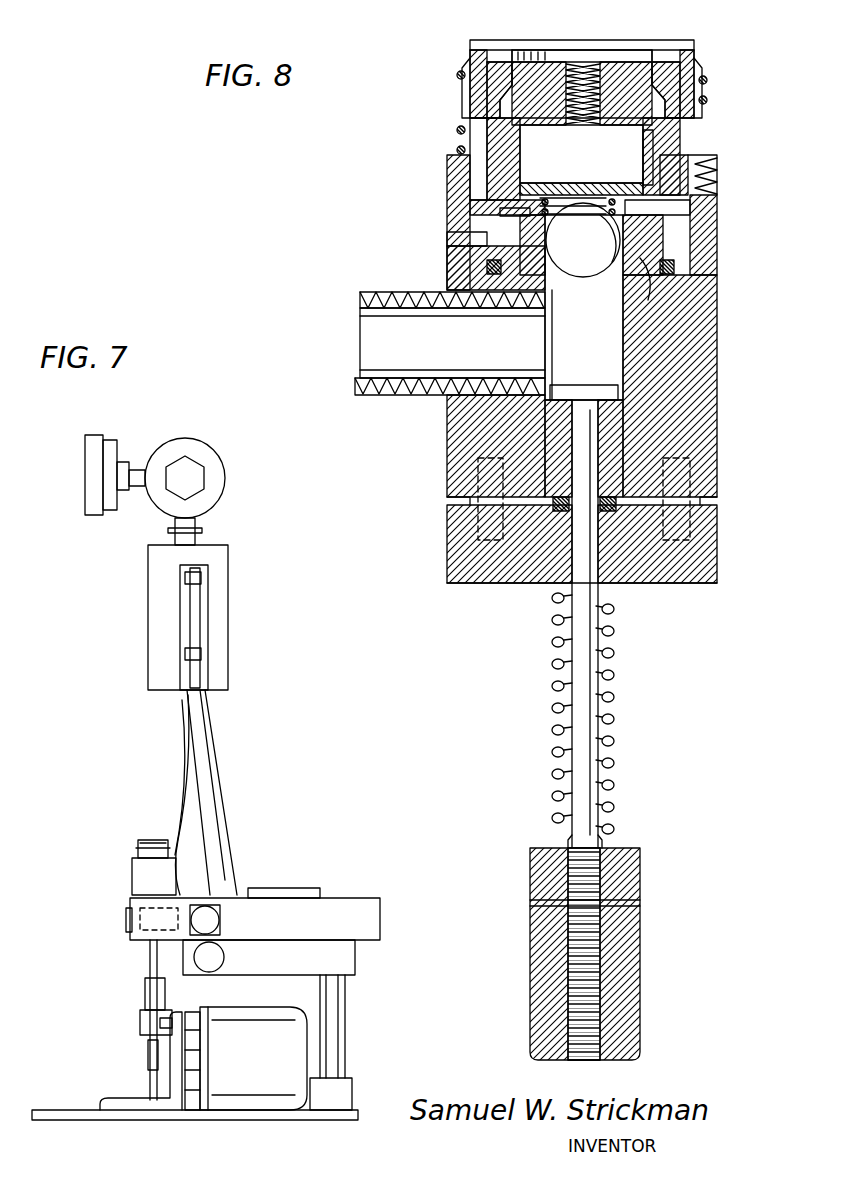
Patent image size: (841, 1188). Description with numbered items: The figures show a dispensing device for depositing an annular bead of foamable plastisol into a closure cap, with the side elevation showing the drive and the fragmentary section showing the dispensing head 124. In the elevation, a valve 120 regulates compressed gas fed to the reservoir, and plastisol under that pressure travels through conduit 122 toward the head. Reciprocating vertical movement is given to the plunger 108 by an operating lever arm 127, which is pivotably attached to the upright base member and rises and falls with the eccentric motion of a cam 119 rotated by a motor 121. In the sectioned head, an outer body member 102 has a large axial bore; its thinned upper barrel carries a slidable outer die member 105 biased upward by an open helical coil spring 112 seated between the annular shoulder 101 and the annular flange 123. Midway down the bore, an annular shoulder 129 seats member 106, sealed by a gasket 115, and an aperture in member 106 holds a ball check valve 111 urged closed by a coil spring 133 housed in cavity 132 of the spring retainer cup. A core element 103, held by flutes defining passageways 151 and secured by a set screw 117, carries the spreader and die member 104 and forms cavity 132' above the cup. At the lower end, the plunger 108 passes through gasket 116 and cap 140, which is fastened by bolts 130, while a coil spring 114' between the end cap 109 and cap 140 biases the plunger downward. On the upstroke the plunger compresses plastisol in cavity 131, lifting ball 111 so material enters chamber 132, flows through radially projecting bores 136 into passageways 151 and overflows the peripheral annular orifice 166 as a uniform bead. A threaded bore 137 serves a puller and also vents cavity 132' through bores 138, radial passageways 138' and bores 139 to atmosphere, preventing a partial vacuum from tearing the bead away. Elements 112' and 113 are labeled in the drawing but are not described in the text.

In FIG. 8, the annular shoulder 101 is at (447, 158).
In FIG. 8, the outer body member 102 is at (447, 432).
In FIG. 8, the core element 103 is at (626, 62).
In FIG. 8, the spreader and die member 104 is at (538, 50).
In FIG. 8, the outer die member 105 is at (466, 66).
In FIG. 8, the valve seat member 106 is at (648, 302).
In FIG. 8, the plunger 108 is at (580, 750).
In FIG. 7, the plunger 108 is at (150, 952).
In FIG. 8, the end cap 109 is at (634, 972).
In FIG. 7, the end cap 109 is at (145, 992).
In FIG. 8, the ball check valve 111 is at (596, 255).
In FIG. 7, the ball check valve 111 is at (305, 888).
In FIG. 7, the open helical coil spring 112 is at (213, 720).
In FIG. 8, the O-ring seal 112' is at (425, 128).
In FIG. 8, the passage 113 is at (540, 198).
In FIG. 8, the coil spring 114' is at (620, 713).
In FIG. 8, the sealing gasket 115 is at (487, 267).
In FIG. 8, the gasket 116 is at (565, 495).
In FIG. 8, the set screw 117 is at (717, 172).
In FIG. 7, the cam 119 is at (150, 1062).
In FIG. 7, the valve 120 is at (214, 456).
In FIG. 7, the motor 121 is at (290, 1042).
In FIG. 8, the conduit 122 is at (362, 300).
In FIG. 7, the conduit 122 is at (178, 786).
In FIG. 8, the annular flange 123 is at (455, 72).
In FIG. 8, the dispensing head 124 is at (408, 502).
In FIG. 7, the operating lever arm 127 is at (148, 1028).
In FIG. 8, the annular shoulder 129 is at (705, 286).
In FIG. 8, the bolts 130 is at (497, 583).
In FIG. 8, the cavity 131 is at (606, 351).
In FIG. 8, the cavity 132 is at (584, 180).
In FIG. 8, the cavity 132' is at (701, 150).
In FIG. 8, the coil spring 133 is at (578, 195).
In FIG. 8, the radially projecting bores 136 is at (655, 208).
In FIG. 8, the threaded bore 137 is at (582, 93).
In FIG. 8, the axially extending bores 138 is at (581, 151).
In FIG. 8, the radial passageways 138' is at (461, 217).
In FIG. 8, the radially projecting bores 139 is at (460, 238).
In FIG. 8, the cap 140 is at (717, 578).
In FIG. 8, the passageways 151 is at (690, 140).
In FIG. 8, the peripheral annular orifice 166 is at (700, 78).